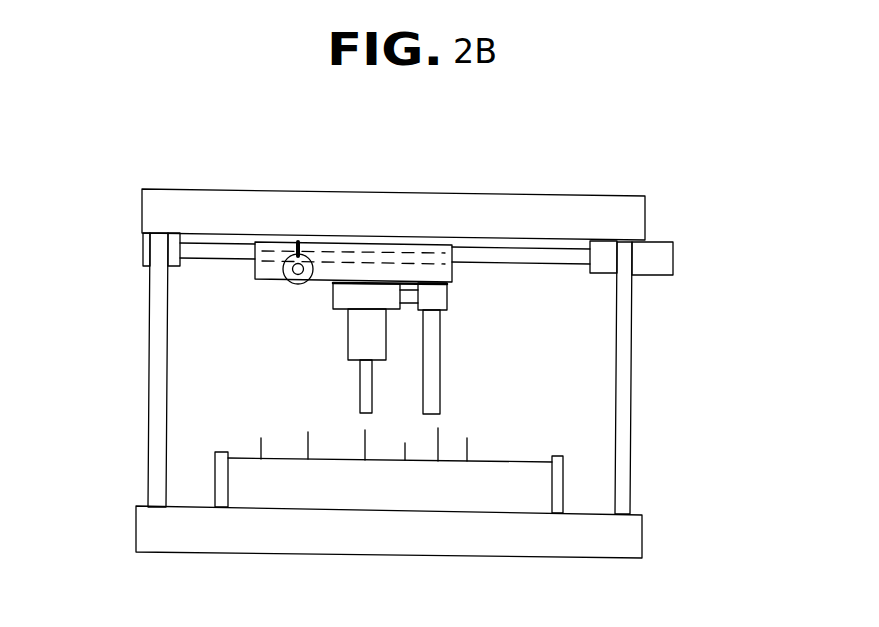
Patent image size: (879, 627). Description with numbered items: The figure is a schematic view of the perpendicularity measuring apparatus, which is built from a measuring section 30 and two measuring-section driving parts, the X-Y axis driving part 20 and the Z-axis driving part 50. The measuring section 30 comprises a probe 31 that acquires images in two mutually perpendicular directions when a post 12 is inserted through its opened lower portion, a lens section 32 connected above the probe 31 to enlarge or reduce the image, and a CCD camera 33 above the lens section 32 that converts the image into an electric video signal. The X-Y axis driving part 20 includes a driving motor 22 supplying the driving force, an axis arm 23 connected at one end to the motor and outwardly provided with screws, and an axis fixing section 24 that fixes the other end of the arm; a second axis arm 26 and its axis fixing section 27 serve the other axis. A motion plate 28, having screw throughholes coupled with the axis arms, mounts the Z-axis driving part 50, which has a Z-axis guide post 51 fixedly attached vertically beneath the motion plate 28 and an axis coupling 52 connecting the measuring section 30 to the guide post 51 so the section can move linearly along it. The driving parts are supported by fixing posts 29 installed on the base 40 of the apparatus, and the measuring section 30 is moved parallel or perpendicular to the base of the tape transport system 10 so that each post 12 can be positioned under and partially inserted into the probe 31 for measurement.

The tape transport system 10 is at (505, 460).
The post 12 is at (308, 440).
The X-Y axis driving part 20 is at (628, 213).
The driving motor 22 is at (657, 264).
The axis arm 23 is at (527, 264).
The axis fixing section 24 is at (148, 243).
The axis arm 26 is at (293, 253).
The axis fixing section 27 is at (309, 261).
The motion plate 28 is at (363, 270).
The fixing post 29 is at (627, 368).
The measuring section 30 is at (391, 361).
The probe 31 is at (363, 378).
The lens section 32 is at (378, 335).
The CCD camera 33 is at (342, 290).
The base 40 is at (603, 548).
The Z-axis driving part 50 is at (535, 269).
The Z-axis guide post 51 is at (436, 404).
The axis coupling 52 is at (432, 295).